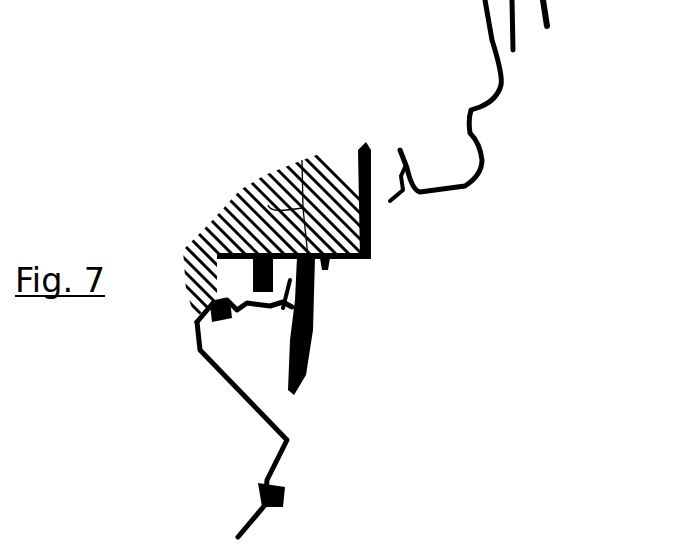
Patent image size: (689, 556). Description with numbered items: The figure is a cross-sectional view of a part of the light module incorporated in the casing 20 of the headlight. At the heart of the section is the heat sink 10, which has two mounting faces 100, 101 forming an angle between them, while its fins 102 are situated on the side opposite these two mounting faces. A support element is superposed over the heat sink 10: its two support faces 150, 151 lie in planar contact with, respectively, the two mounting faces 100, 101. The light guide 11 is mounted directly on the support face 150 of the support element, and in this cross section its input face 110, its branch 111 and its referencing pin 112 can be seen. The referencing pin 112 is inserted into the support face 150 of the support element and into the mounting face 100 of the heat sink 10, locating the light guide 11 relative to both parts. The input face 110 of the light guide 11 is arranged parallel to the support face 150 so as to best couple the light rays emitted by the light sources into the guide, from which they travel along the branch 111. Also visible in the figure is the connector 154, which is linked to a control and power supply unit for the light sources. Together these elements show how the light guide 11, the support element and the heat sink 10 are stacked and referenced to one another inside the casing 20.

The heat sink 10 is at (228, 187).
The light guide 11 is at (318, 342).
The casing 20 is at (482, 143).
The mounting face 100 is at (245, 255).
The mounting face 101 is at (367, 205).
The fins 102 is at (302, 160).
The input face 110 is at (268, 205).
The branch 111 is at (310, 372).
The referencing pin 112 is at (325, 260).
The support face 150 is at (355, 260).
The support face 151 is at (373, 223).
The connector 154 is at (250, 279).